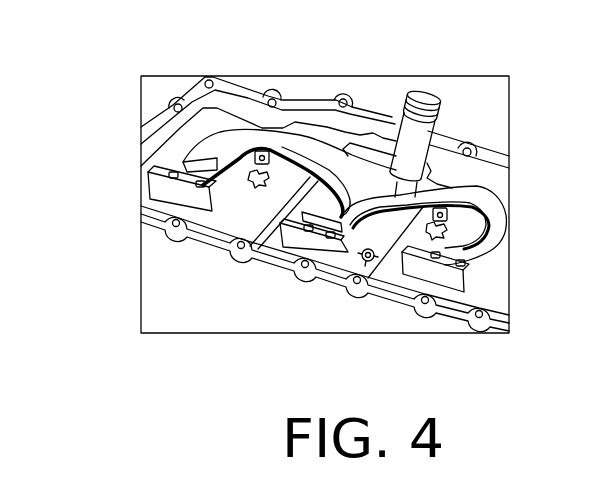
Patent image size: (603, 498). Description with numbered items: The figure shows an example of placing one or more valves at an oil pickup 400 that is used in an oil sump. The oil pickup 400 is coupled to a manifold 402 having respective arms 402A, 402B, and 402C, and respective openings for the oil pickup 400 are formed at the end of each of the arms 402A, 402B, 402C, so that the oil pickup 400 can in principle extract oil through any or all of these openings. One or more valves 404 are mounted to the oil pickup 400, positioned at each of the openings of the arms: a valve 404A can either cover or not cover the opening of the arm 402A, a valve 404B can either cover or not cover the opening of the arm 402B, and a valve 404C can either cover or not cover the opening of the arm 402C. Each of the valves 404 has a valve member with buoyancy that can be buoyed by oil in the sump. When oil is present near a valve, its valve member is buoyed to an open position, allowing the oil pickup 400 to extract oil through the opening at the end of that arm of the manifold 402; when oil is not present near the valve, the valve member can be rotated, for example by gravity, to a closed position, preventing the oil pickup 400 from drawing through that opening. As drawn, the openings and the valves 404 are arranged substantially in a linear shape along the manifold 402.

The oil pickup 400 is at (440, 108).
The manifold 402 is at (465, 197).
The arm 402A is at (234, 152).
The arm 402B is at (350, 214).
The arm 402C is at (463, 232).
The valves 404 is at (167, 357).
The valve 404A is at (168, 188).
The valve 404B is at (293, 237).
The valve 404C is at (443, 278).